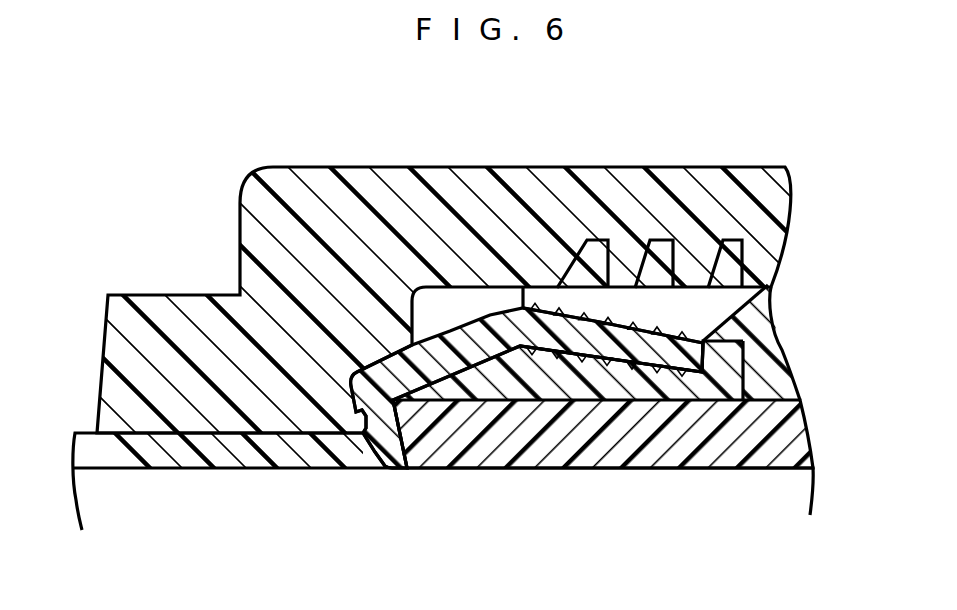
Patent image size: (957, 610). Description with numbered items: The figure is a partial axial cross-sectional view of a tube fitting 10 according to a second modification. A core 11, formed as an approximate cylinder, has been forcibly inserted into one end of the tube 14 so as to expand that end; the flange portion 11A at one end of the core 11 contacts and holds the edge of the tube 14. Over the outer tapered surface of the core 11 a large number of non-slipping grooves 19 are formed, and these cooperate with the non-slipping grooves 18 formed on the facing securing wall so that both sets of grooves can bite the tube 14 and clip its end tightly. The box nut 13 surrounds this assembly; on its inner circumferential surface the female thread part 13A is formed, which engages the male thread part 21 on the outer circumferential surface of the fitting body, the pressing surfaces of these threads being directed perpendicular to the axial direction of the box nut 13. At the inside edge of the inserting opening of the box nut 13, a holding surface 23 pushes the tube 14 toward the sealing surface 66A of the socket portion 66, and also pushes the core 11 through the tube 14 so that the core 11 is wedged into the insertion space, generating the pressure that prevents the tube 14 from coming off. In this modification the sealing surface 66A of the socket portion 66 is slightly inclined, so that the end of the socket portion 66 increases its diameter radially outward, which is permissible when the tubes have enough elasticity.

The fastening device 10 is at (538, 138).
The box nut 13 is at (378, 168).
The female thread part 13A is at (690, 277).
The grooves 18 is at (628, 305).
The male thread part 21 is at (665, 262).
The tube 14 is at (168, 513).
The socket portion 66 is at (665, 450).
The core 11 is at (580, 390).
The flange portion 11A is at (745, 357).
The non-slipping grooves 19 is at (525, 348).
The holding surface 23 is at (360, 442).
The sealing surface 66A is at (392, 462).